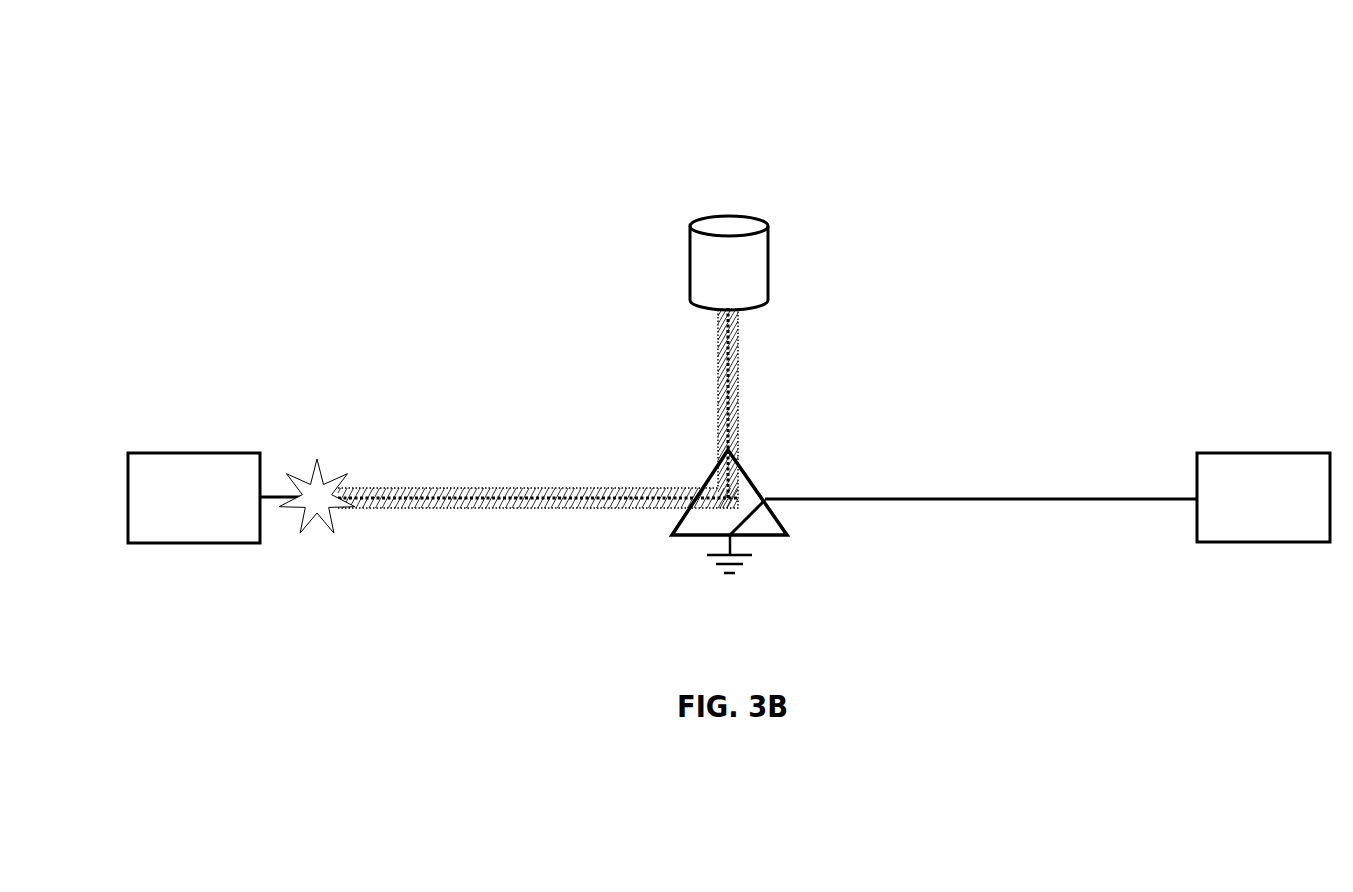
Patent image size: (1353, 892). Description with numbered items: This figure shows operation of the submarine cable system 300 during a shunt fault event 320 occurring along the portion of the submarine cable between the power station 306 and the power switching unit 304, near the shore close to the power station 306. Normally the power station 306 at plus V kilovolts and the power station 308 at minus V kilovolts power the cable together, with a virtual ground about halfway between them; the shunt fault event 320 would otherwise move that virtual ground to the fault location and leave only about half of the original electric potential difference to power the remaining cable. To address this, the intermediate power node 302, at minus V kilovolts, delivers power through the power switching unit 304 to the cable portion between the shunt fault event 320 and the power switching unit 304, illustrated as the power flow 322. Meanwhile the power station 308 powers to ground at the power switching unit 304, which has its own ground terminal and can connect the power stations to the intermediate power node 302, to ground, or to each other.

The submarine cable system 300 is at (1010, 50).
The intermediate power node 302 is at (768, 258).
The power switching unit 304 is at (752, 480).
The power station 306 is at (197, 453).
The power station 308 is at (1265, 453).
The shunt fault event 320 is at (317, 458).
The power flow 322 is at (525, 492).